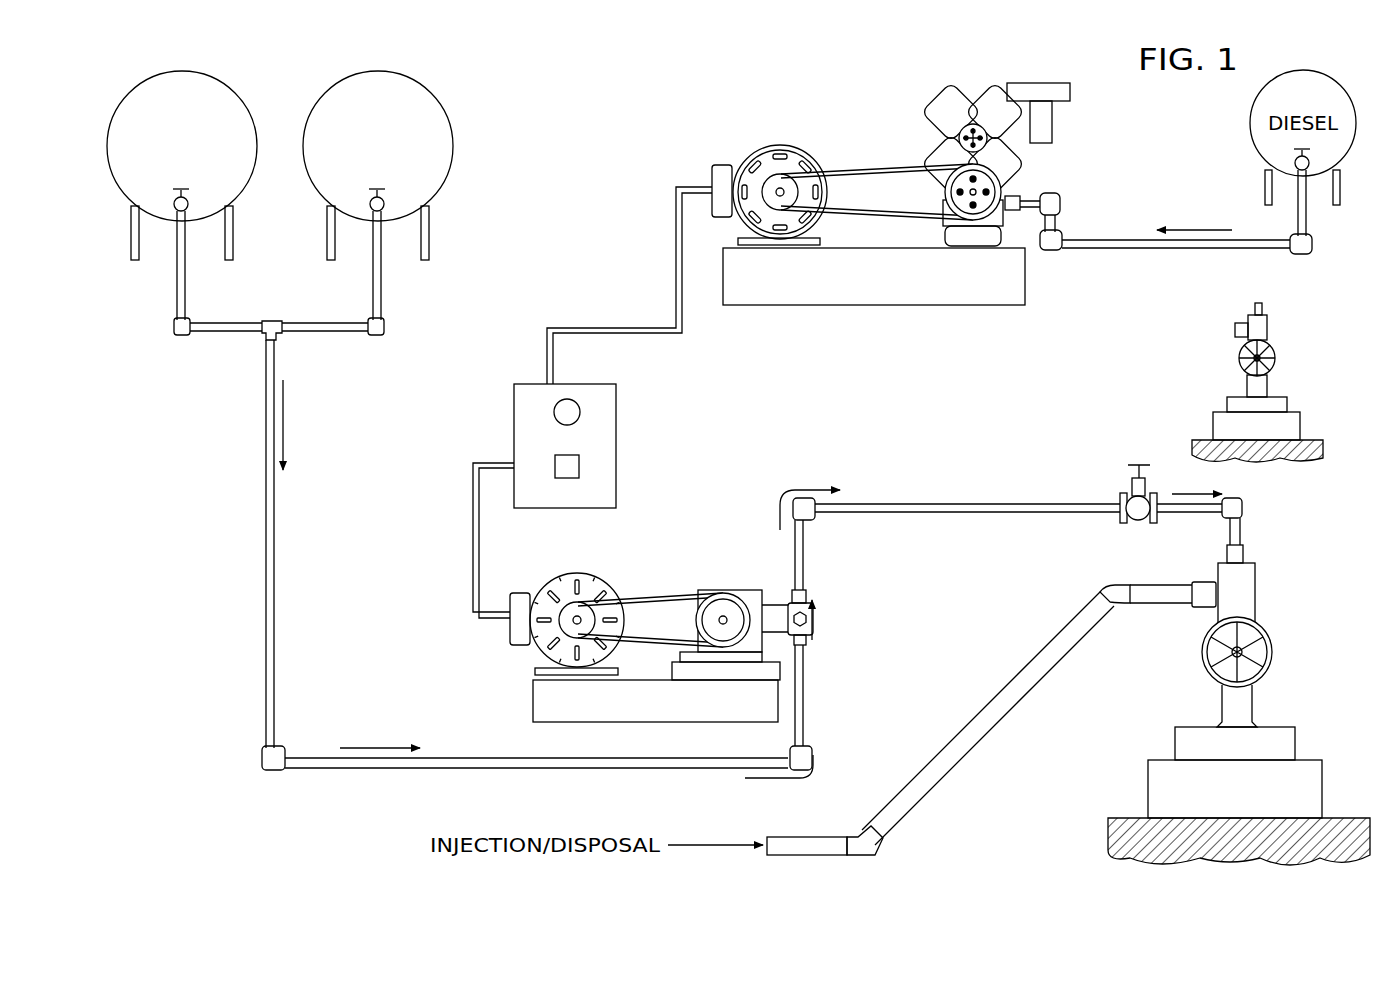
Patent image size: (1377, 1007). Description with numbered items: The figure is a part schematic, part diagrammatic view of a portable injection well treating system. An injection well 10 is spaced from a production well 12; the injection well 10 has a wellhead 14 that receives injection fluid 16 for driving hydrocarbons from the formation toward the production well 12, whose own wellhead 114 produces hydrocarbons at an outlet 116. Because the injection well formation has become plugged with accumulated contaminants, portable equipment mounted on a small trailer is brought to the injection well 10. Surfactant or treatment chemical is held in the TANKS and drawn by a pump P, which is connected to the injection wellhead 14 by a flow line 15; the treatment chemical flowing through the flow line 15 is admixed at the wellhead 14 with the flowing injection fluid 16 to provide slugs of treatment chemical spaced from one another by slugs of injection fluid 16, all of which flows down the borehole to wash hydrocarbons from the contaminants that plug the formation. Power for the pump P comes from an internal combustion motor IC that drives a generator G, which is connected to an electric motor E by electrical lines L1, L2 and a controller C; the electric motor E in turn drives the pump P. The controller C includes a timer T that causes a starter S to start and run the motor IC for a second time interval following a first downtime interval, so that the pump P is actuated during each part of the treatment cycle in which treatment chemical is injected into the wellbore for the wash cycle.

The surfactant tanks TANKS is at (377, 72).
The generator G is at (797, 141).
The internal combustion motor IC is at (1020, 165).
The wellhead 114 is at (1256, 301).
The outlet 116 is at (1232, 330).
The production well 12 is at (1190, 361).
The electrical line L1 is at (545, 338).
The electrical line L2 is at (556, 352).
The starter S is at (583, 401).
The timer T is at (582, 460).
The controller C is at (618, 495).
The electric motor E is at (601, 571).
The pump P is at (746, 584).
The flow line 15 is at (1019, 502).
The wellhead 14 is at (1245, 539).
The injection well 10 is at (1222, 556).
The injection fluid 16 is at (1174, 610).